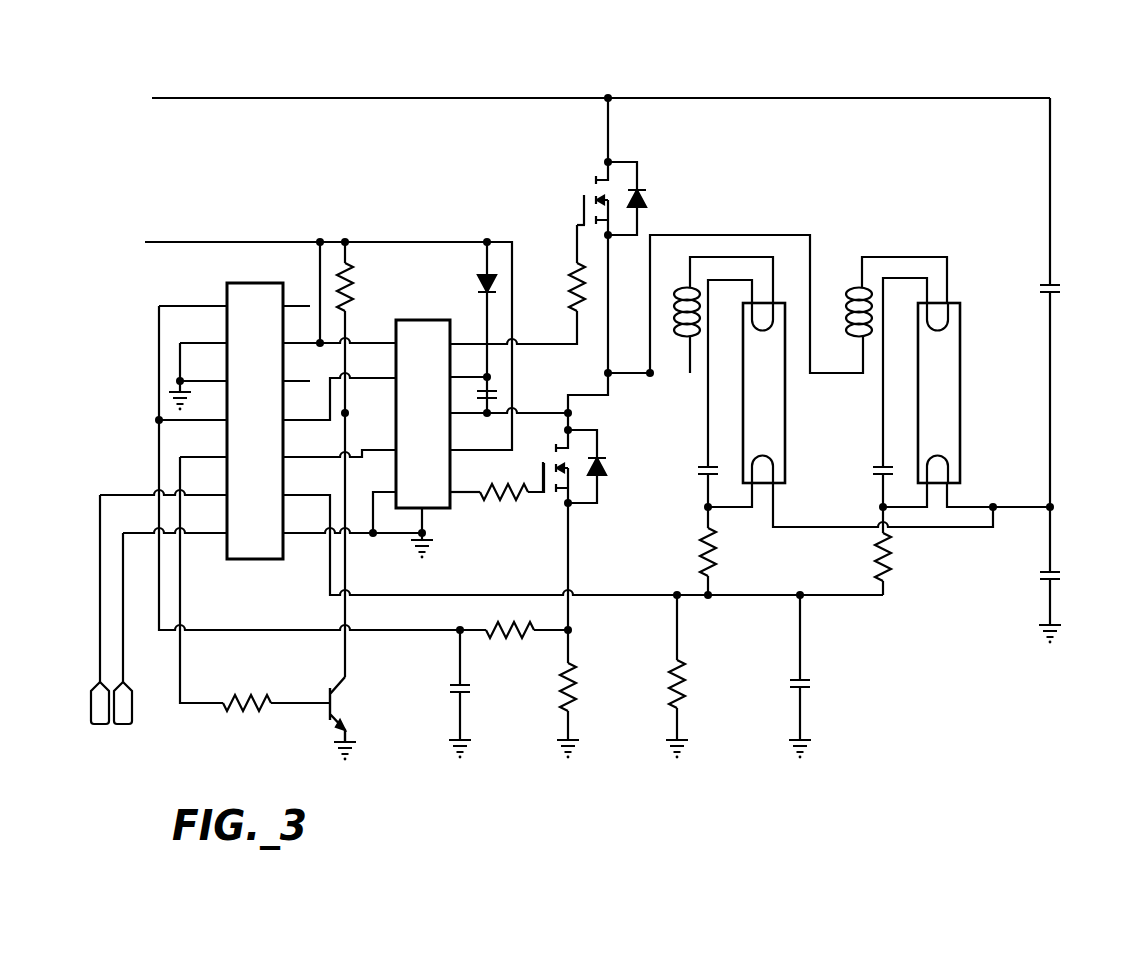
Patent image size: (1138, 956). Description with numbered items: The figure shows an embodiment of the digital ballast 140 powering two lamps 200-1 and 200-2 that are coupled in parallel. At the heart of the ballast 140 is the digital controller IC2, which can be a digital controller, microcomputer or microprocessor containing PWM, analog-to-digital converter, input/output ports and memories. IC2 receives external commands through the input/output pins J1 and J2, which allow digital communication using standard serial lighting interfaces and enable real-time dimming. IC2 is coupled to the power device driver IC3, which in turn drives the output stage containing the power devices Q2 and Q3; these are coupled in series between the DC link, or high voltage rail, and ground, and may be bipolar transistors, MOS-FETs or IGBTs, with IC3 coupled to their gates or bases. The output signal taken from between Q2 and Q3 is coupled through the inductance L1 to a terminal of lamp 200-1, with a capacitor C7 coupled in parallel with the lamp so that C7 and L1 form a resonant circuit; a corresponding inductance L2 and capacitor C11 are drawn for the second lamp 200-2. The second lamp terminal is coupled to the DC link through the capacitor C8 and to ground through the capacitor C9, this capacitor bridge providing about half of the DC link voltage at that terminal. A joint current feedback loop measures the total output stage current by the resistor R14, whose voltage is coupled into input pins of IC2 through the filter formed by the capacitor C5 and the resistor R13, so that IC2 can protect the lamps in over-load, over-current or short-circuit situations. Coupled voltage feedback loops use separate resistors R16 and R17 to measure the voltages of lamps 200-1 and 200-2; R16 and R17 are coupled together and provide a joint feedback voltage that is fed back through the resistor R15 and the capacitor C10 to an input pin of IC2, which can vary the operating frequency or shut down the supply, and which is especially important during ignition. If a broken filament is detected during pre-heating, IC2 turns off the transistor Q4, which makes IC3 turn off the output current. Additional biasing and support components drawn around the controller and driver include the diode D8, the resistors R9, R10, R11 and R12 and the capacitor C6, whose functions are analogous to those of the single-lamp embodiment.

The digital ballast 140 is at (432, 72).
The lamp 200-1 is at (786, 400).
The lamp 200-2 is at (961, 400).
The digital controller IC2 is at (259, 421).
The power device driver IC3 is at (417, 427).
The power device Q2 is at (606, 190).
The power device Q3 is at (583, 458).
The transistor Q4 is at (353, 718).
The diode D8 is at (465, 309).
The resistor R9 is at (276, 719).
The resistor R10 is at (363, 459).
The resistor R11 is at (556, 268).
The resistor R12 is at (511, 495).
The resistor R13 is at (514, 643).
The resistor R14 is at (586, 694).
The resistor R15 is at (695, 676).
The resistor R16 is at (726, 551).
The resistor R17 is at (902, 564).
The capacitor C5 is at (473, 694).
The capacitor C6 is at (509, 395).
The capacitor C7 is at (693, 469).
The capacitor C8 is at (1064, 302).
The capacitor C9 is at (1064, 575).
The capacitor C10 is at (819, 676).
The capacitor C11 is at (864, 469).
The inductance L1 is at (715, 315).
The inductance L2 is at (888, 313).
The input/output pin J1 is at (130, 689).
The input/output pin J2 is at (88, 689).